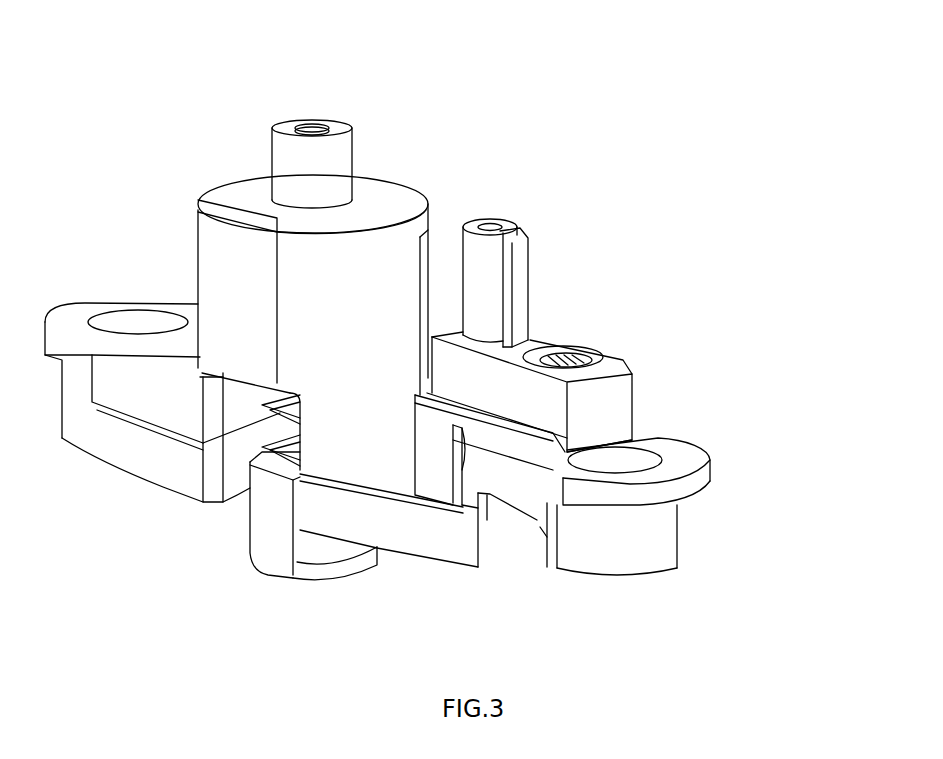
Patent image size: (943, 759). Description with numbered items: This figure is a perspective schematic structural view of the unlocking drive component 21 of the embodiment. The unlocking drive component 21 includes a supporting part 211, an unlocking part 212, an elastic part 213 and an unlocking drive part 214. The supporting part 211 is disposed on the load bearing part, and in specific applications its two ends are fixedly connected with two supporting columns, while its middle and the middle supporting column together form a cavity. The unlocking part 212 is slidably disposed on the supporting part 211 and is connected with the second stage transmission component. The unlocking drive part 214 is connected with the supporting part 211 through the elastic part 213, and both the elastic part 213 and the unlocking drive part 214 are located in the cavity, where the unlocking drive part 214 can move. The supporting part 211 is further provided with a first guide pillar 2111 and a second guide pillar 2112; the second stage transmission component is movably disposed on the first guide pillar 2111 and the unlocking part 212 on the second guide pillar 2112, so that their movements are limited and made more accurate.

The unlocking drive component 21 is at (612, 228).
The supporting part 211 is at (712, 470).
The first guide pillar 2111 is at (305, 117).
The second guide pillar 2112 is at (583, 348).
The unlocking part 212 is at (483, 222).
The elastic part 213 is at (217, 423).
The unlocking drive part 214 is at (247, 525).